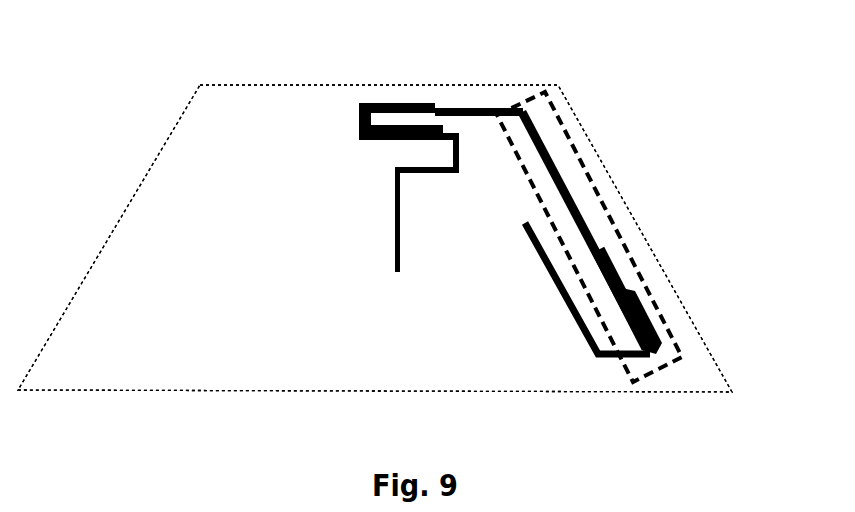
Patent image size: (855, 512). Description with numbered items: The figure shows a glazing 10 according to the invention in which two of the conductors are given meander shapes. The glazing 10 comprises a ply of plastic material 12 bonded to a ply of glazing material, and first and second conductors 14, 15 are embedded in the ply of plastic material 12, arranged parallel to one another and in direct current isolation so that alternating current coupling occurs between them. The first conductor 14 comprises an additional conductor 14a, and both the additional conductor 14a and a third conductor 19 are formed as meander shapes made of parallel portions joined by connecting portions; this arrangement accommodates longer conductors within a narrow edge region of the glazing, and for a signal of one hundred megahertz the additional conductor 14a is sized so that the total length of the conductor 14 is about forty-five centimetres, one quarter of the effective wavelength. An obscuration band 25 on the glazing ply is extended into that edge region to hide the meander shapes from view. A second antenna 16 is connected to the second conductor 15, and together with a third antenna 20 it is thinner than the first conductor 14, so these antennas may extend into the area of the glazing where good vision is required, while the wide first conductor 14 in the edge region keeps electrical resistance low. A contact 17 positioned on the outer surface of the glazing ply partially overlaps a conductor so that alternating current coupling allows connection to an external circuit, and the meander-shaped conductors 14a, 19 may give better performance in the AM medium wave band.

The glazing 10 is at (628, 87).
The ply of plastic material 12 is at (607, 160).
The obscuration band 25 is at (607, 210).
The third conductor 19 is at (360, 103).
The additional conductor 14a is at (453, 108).
The third antenna 20 is at (393, 215).
The first conductor 14 is at (617, 263).
The contact 17 is at (665, 335).
The second conductor 15 is at (655, 354).
The second antenna 16 is at (595, 327).